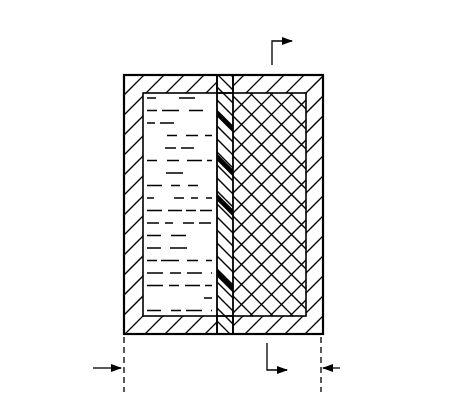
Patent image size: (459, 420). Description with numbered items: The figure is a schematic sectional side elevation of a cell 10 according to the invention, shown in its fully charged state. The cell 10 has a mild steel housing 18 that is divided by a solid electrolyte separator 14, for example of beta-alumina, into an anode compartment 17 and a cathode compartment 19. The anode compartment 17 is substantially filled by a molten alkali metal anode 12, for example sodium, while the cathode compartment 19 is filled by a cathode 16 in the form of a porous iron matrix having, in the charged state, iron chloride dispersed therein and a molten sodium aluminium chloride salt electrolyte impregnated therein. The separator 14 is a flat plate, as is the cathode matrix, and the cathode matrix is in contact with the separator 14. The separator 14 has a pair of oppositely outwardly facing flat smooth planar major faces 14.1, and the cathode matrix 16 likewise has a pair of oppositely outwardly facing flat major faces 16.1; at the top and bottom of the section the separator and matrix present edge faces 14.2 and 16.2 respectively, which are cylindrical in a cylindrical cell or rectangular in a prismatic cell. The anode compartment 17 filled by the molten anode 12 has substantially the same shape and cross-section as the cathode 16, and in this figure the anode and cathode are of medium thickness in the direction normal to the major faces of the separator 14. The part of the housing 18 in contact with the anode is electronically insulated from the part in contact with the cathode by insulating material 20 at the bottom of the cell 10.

The cell 10 is at (177, 26).
The molten alkali metal anode 12 is at (158, 196).
The solid electrolyte separator 14 is at (230, 198).
The major faces of the separator 14.1 is at (208, 183).
The edge face of the separator 14.2 is at (225, 73).
The cathode 16 is at (284, 228).
The major faces of the cathode matrix 16.1 is at (215, 249).
The edge face of the cathode matrix 16.2 is at (299, 89).
The anode compartment 17 is at (169, 281).
The housing 18 is at (130, 214).
The cathode compartment 19 is at (283, 272).
The insulating material 20 is at (216, 341).